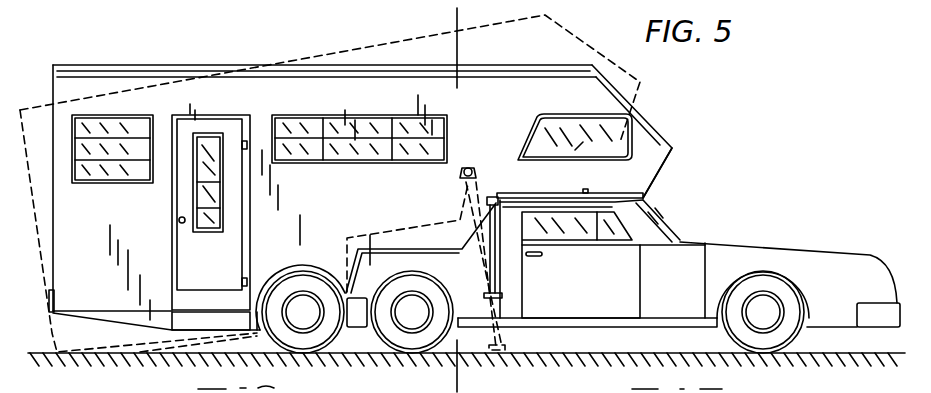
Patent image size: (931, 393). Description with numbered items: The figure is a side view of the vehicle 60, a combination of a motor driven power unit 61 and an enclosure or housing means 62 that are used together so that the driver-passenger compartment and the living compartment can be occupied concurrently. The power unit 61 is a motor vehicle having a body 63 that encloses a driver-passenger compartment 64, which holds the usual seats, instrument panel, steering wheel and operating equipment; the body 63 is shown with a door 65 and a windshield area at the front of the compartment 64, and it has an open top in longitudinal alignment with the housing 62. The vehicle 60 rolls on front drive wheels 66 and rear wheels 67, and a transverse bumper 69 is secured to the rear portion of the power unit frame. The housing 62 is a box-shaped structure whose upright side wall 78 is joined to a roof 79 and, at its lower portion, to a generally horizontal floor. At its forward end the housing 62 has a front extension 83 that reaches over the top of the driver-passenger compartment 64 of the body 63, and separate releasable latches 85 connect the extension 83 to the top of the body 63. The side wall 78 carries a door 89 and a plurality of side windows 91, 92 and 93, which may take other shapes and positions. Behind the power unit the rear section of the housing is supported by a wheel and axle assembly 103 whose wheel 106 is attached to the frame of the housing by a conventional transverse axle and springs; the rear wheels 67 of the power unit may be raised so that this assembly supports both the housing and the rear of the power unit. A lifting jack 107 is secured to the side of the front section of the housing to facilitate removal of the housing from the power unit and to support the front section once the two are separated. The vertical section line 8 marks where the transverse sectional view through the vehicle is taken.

The section line 8 is at (455, 15).
The vehicle 60 is at (732, 114).
The motor driven power unit 61 is at (776, 246).
The enclosure or housing means 62 is at (646, 118).
The body 63 is at (690, 296).
The driver-passenger compartment 64 is at (664, 229).
The automobile door 65 is at (596, 296).
The front drive wheels 66 is at (774, 288).
The rear wheels 67 is at (420, 284).
The transverse bumper 69 is at (352, 326).
The side wall 78 is at (120, 262).
The roof 79 is at (165, 68).
The front extension 83 is at (647, 170).
The releasable latches 85 is at (586, 190).
The door 89 is at (218, 272).
The side window 91 is at (120, 173).
The side window 92 is at (365, 128).
The side window 93 is at (575, 128).
The wheel and axle assembly 103 is at (310, 335).
The wheel 106 is at (310, 254).
The lifting jack 107 is at (491, 234).